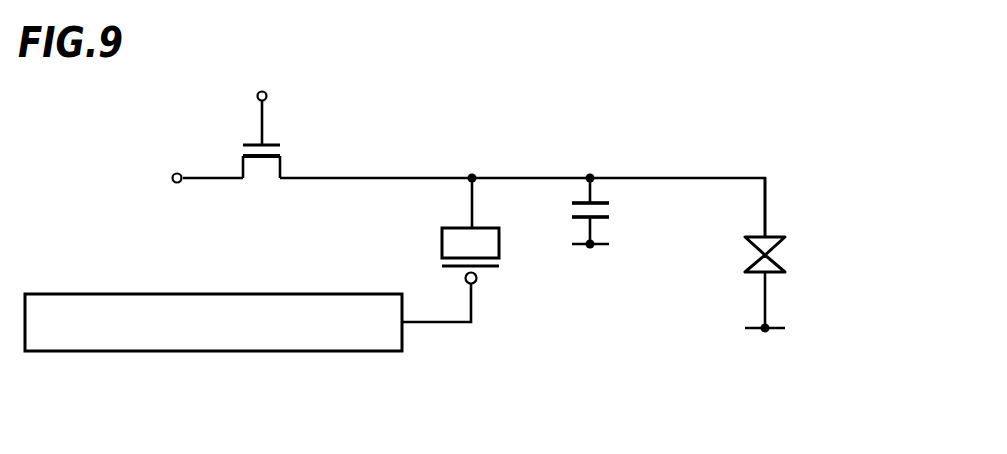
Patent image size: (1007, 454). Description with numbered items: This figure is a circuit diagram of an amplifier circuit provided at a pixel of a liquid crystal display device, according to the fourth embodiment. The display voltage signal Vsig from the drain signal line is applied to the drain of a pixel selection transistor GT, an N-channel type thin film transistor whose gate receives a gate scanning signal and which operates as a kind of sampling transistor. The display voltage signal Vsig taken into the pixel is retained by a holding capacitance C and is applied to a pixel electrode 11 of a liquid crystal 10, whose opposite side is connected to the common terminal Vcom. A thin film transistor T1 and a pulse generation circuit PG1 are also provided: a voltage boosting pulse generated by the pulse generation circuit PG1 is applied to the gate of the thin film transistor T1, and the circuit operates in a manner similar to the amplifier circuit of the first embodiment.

The pixel selection transistor GT is at (270, 142).
The thin film transistor T1 is at (502, 270).
The holding capacitance C is at (603, 213).
The pixel electrode 11 is at (773, 194).
The liquid crystal 10 is at (787, 256).
The pulse generation circuit PG1 is at (175, 352).
The display voltage signal Vsig is at (147, 177).
The common voltage terminal Vcom is at (776, 346).